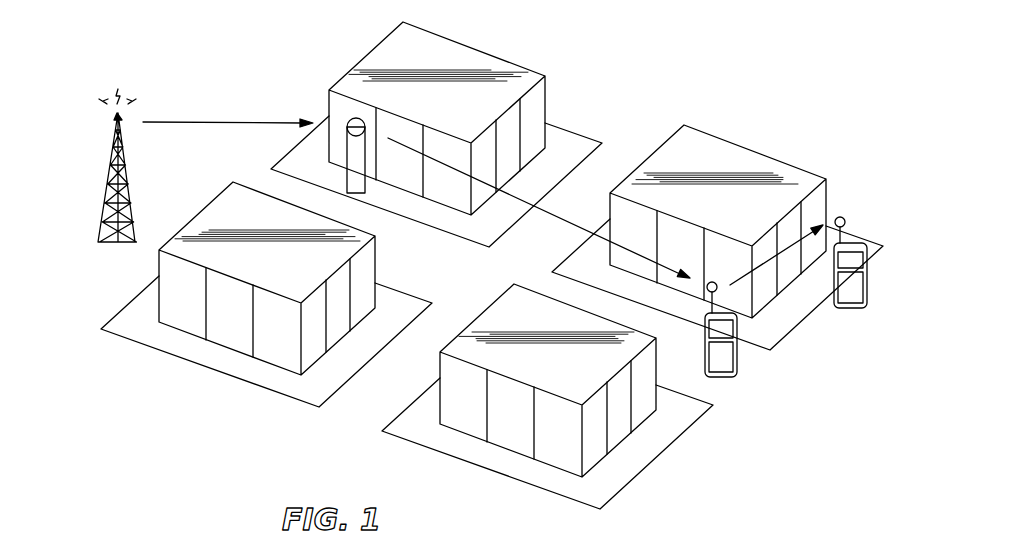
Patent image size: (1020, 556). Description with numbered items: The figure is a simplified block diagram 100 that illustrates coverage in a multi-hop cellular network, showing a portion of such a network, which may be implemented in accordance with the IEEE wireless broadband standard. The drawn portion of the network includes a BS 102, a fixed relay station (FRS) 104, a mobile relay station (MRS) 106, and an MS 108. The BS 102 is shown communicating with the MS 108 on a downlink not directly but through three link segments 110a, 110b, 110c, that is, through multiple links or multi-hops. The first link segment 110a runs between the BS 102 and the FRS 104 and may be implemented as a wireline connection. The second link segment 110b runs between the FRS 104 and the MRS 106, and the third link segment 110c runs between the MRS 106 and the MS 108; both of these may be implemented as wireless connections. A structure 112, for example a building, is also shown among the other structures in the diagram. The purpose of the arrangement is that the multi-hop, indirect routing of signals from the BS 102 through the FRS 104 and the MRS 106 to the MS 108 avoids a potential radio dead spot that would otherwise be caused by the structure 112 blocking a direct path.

The simplified block diagram 100 is at (743, 95).
The BS 102 is at (103, 189).
The fixed relay station 104 is at (347, 147).
The mobile relay station 106 is at (740, 355).
The MS 108 is at (857, 230).
The link segment 110a is at (240, 122).
The link segment 110b is at (570, 217).
The link segment 110c is at (790, 247).
The structure 112 is at (752, 162).